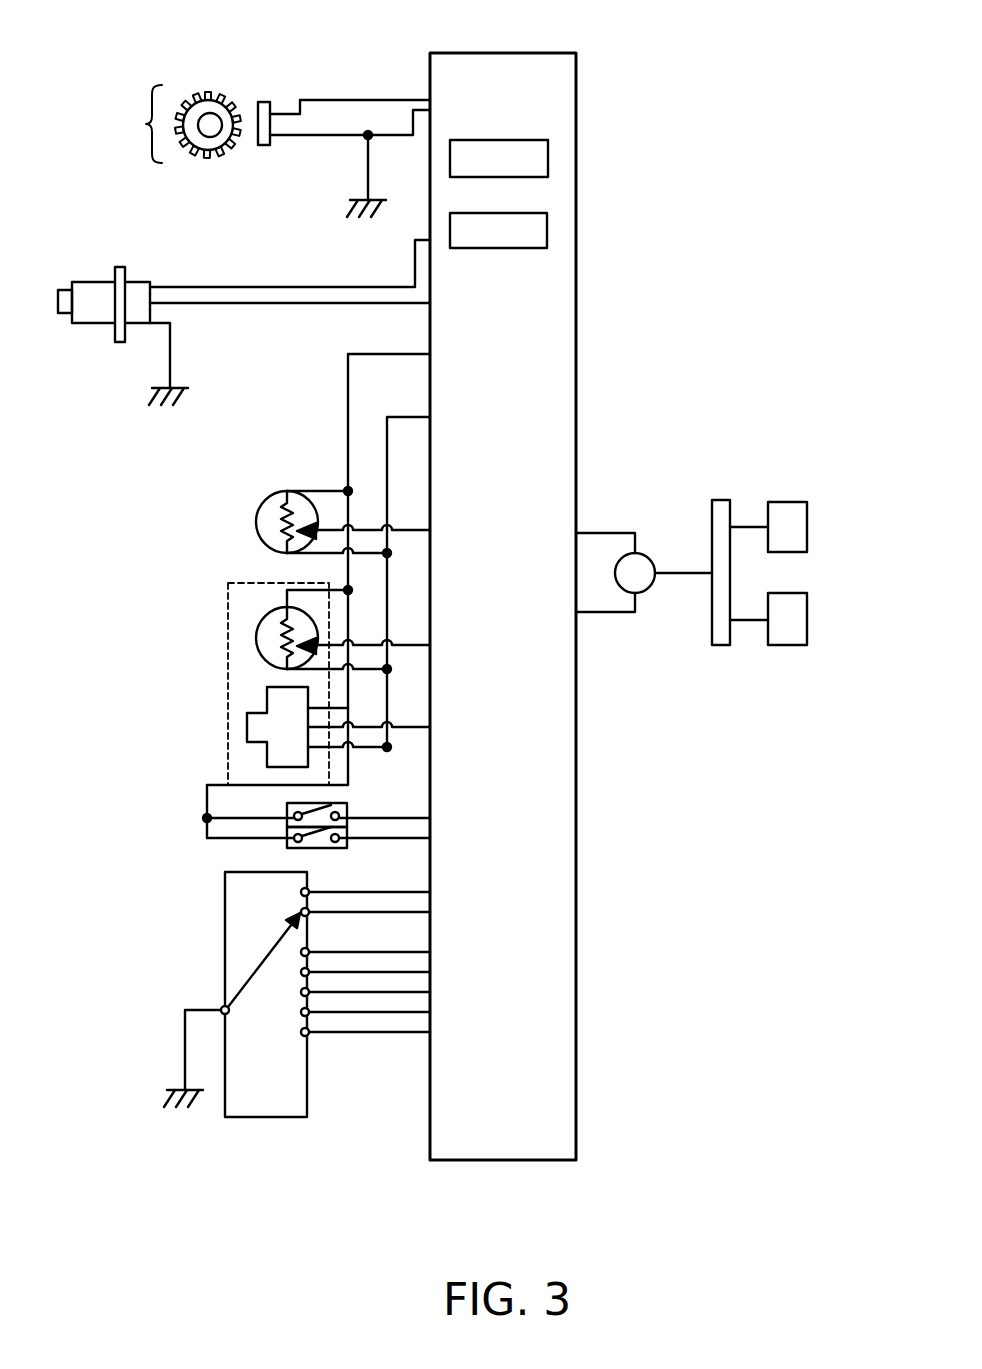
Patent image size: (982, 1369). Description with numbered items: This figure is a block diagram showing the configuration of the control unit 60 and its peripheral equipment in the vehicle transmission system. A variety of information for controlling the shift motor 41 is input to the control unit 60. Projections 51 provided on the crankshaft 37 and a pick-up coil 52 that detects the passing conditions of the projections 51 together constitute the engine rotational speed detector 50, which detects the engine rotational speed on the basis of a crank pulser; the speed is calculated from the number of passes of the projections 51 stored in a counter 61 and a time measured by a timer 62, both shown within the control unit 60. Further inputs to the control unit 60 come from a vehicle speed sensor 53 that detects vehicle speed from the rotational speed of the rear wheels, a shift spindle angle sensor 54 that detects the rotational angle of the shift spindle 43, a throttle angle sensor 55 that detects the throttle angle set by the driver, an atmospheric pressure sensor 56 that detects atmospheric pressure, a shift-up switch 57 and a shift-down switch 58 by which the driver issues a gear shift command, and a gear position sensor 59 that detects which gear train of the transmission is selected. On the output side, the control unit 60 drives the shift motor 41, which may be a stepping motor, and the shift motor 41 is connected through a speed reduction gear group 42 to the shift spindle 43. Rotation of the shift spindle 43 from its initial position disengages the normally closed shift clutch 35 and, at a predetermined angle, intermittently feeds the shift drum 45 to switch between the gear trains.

The shift clutch 35 is at (787, 502).
The crankshaft 37 is at (208, 128).
The shift motor 41 is at (652, 595).
The speed reduction gear group 42 is at (682, 572).
The shift spindle 43 is at (720, 500).
The shift drum 45 is at (787, 645).
The engine rotational speed detector 50 is at (270, 128).
The projections 51 is at (206, 94).
The pick-up coil 52 is at (264, 148).
The vehicle speed sensor 53 is at (93, 312).
The shift spindle angle sensor 54 is at (242, 525).
The throttle angle sensor 55 is at (246, 643).
The atmospheric pressure sensor 56 is at (242, 731).
The shift-up switch 57 is at (348, 805).
The shift-down switch 58 is at (348, 847).
The gear position sensor 59 is at (205, 938).
The control unit 60 is at (505, 1160).
The counter 61 is at (517, 177).
The timer 62 is at (517, 248).